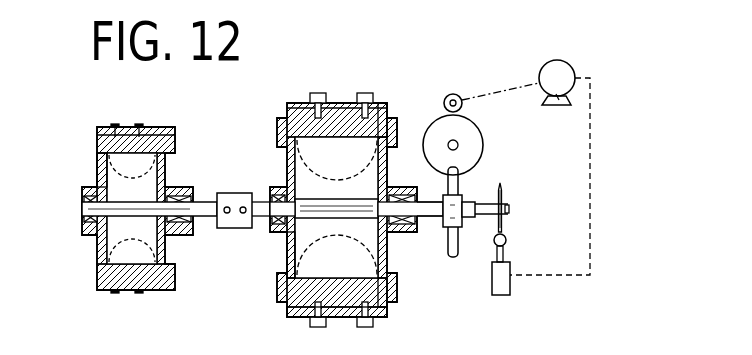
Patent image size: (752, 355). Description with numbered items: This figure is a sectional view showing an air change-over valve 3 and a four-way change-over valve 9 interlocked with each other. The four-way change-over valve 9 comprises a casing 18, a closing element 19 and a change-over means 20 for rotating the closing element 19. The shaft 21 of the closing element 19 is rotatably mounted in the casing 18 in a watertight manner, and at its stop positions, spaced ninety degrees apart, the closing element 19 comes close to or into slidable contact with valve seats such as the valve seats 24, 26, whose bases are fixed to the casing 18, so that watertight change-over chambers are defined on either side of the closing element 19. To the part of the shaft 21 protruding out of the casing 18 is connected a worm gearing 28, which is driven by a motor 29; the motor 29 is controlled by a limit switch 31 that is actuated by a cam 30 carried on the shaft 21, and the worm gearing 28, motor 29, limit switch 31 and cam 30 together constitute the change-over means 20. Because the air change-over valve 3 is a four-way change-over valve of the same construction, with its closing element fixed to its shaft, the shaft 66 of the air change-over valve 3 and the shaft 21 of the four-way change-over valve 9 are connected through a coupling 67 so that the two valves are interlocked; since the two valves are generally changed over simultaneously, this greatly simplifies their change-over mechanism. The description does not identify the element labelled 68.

The air change-over valve 3 is at (132, 110).
The housing wall 68 is at (113, 183).
The shaft 66 is at (125, 212).
The coupling 67 is at (230, 193).
The four-way change-over valve 9 is at (336, 89).
The valve seat 26 is at (375, 105).
The closing element 19 is at (287, 243).
The casing 18 is at (307, 318).
The valve seat 24 is at (382, 308).
The shaft 21 is at (432, 213).
The worm gearing 28 is at (485, 145).
The change-over means 20 is at (456, 89).
The motor 29 is at (560, 72).
The cam 30 is at (502, 225).
The limit switch 31 is at (505, 287).